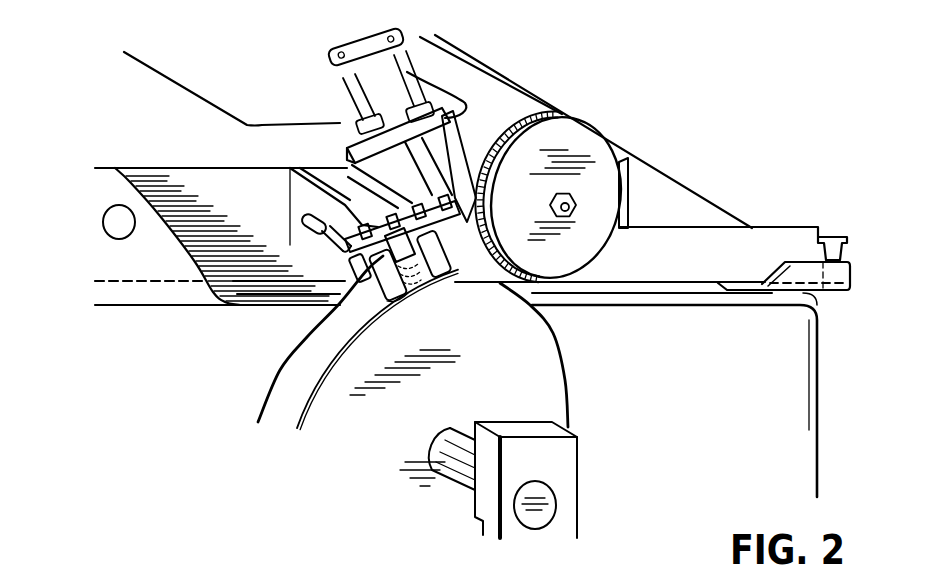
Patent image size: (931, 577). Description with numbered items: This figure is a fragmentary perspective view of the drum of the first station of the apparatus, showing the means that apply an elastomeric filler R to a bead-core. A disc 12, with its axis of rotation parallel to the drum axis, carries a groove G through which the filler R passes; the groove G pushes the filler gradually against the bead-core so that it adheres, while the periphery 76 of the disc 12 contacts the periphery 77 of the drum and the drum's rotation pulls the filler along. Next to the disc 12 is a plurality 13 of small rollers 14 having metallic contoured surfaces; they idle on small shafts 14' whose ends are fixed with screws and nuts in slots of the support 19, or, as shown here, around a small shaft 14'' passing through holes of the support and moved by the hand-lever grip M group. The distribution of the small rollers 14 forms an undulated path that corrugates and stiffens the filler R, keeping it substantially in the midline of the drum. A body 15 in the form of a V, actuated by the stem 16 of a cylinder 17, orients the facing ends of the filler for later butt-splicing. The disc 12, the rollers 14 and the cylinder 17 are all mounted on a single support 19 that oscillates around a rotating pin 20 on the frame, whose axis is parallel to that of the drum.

The rotating pin 20 is at (117, 206).
The stem 16 is at (343, 100).
The cylinder 17 is at (352, 138).
The plurality of small rollers 13 is at (422, 208).
The body in the form of a V 15 is at (473, 168).
The groove G is at (525, 118).
The disc 12 is at (578, 141).
The support 19 is at (628, 177).
The elastomeric filler R is at (782, 236).
The hand-lever grip M is at (300, 240).
The small shaft 14'' is at (321, 266).
The small shafts 14' is at (449, 254).
The small rollers 14 is at (339, 292).
The periphery of the drum 77 is at (537, 286).
The periphery of the disc 76 is at (541, 284).